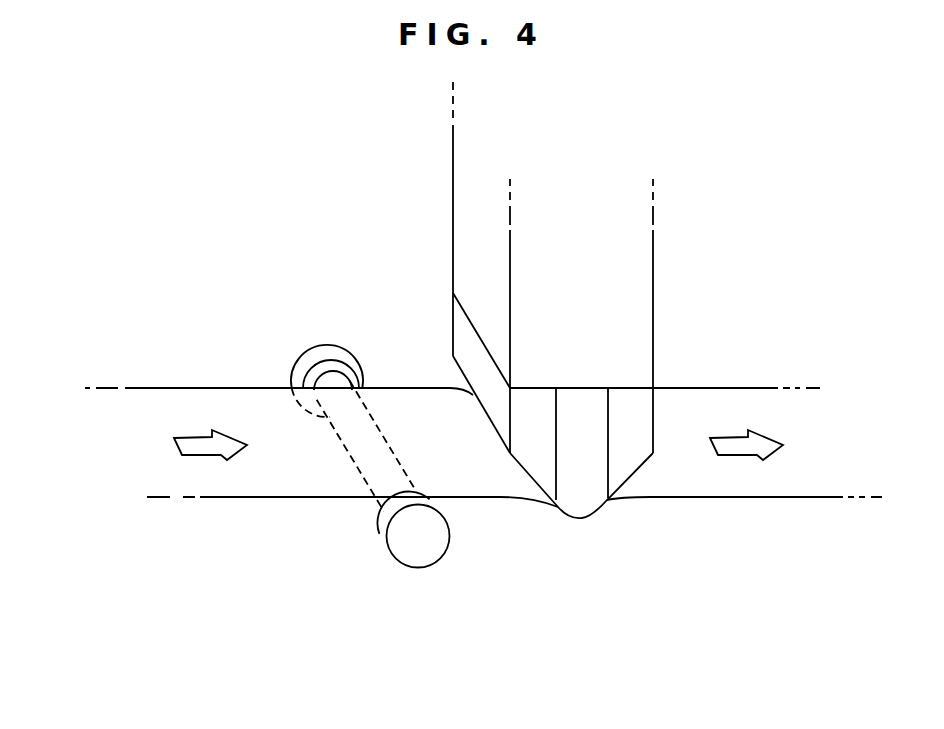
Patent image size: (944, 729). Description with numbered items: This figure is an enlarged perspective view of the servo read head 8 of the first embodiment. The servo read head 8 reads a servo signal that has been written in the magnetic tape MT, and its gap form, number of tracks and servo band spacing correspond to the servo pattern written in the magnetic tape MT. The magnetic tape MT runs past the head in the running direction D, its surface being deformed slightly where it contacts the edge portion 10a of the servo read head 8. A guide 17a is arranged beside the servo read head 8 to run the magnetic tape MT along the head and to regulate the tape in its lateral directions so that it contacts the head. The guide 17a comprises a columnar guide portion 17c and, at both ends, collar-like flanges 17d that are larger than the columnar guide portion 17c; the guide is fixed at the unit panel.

The servo read head 8 is at (595, 223).
The cutting blade 10a is at (365, 267).
The guide 17a is at (450, 538).
The columnar guide portion 17c is at (333, 382).
The flange 17d is at (328, 346).
The tape running direction D is at (197, 444).
The magnetic tape MT is at (268, 485).